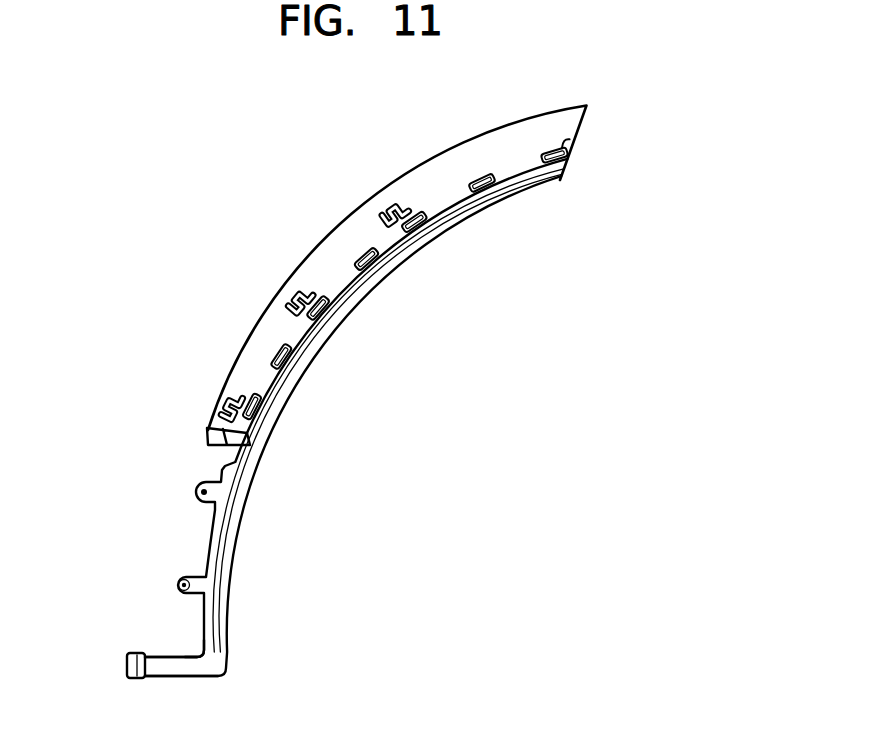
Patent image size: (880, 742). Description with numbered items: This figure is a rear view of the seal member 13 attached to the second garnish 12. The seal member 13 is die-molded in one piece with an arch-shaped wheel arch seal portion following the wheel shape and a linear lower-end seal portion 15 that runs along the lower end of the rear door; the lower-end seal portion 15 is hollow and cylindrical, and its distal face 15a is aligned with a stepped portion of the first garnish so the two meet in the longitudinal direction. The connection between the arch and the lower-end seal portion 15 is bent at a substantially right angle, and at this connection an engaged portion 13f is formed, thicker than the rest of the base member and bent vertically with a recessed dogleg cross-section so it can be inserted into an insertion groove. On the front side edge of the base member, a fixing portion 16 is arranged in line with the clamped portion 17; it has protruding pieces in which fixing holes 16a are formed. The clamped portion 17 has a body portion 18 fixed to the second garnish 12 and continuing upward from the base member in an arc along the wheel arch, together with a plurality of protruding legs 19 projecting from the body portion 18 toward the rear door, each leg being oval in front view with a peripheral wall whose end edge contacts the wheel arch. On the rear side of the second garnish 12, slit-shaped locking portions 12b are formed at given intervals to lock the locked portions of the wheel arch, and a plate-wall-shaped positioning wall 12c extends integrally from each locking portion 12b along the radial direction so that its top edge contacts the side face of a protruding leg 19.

The second garnish 12 is at (594, 130).
The locking portion 12b is at (384, 206).
The positioning wall 12c is at (405, 233).
The seal member 13 is at (319, 354).
The engaged portion 13f is at (199, 651).
The lower-end seal portion 15 is at (176, 686).
The distal face 15a is at (127, 665).
The fixing portion 16 is at (129, 535).
The fixing hole 16a is at (196, 490).
The clamped portion 17 is at (330, 223).
The body portion 18 is at (383, 243).
The protruding leg 19 is at (548, 150).